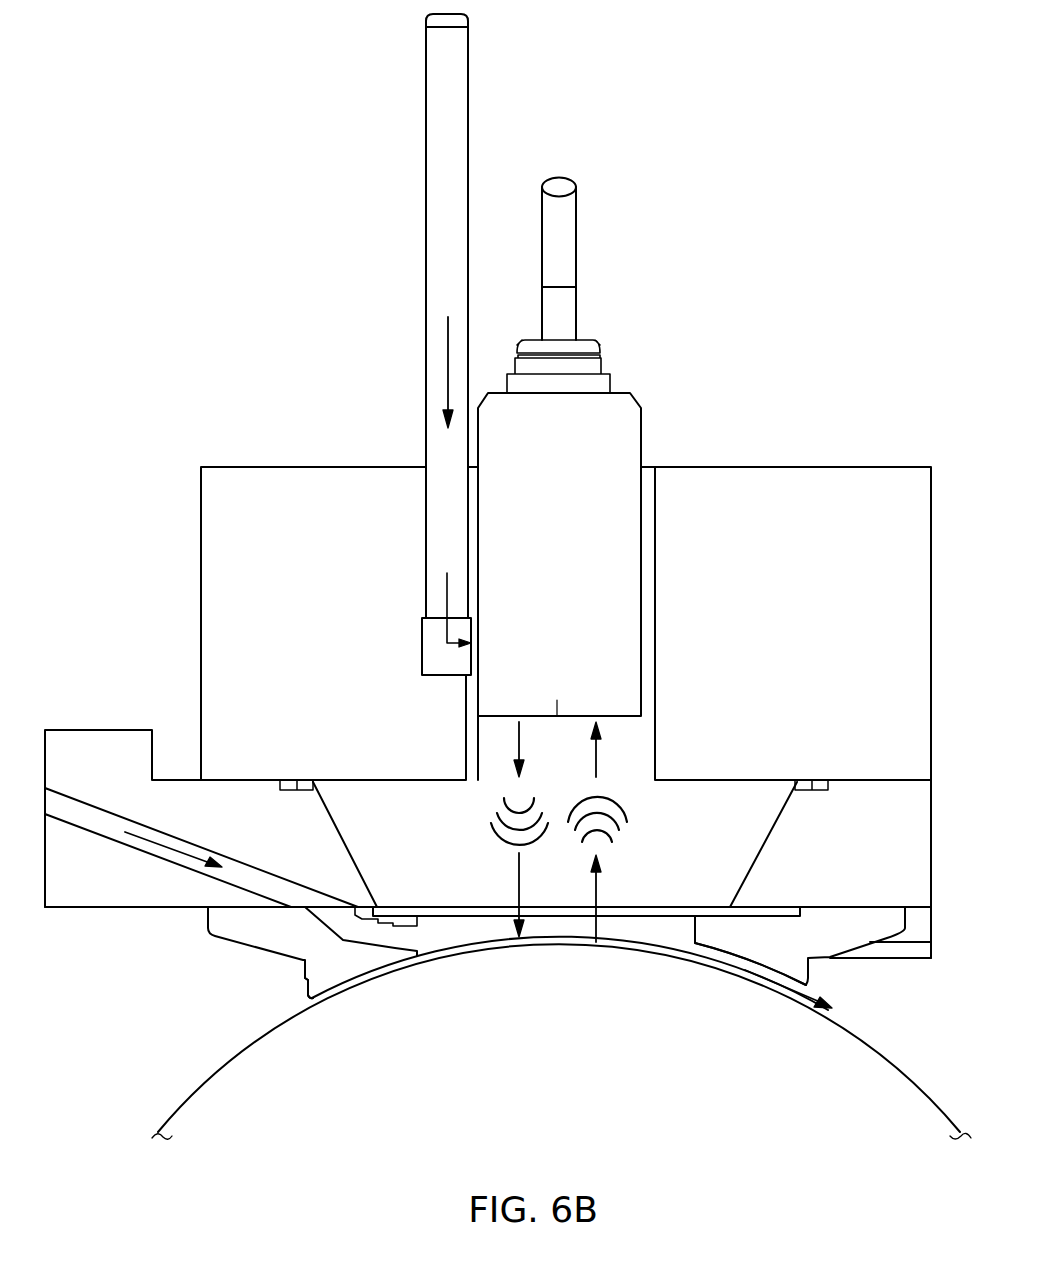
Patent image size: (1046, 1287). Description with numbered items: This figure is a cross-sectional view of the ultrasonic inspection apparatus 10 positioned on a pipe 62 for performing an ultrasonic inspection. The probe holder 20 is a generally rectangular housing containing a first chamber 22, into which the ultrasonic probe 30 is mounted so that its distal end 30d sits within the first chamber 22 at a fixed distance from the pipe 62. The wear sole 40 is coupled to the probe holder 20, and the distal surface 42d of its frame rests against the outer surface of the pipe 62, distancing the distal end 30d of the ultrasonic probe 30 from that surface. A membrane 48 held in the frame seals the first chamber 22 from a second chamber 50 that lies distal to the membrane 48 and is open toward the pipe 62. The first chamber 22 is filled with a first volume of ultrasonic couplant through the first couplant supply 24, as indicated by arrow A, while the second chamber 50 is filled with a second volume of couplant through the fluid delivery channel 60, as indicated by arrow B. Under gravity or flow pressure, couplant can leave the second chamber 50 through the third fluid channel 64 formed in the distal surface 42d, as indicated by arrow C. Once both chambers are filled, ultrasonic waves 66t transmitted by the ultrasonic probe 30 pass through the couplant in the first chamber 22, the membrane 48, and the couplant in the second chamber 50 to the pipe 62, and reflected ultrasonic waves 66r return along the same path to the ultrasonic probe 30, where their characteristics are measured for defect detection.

The ultrasonic inspection apparatus 10 is at (293, 322).
The probe holder 20 is at (215, 515).
The first chamber 22 is at (707, 895).
The first couplant supply 24 is at (438, 95).
The ultrasonic probe 30 is at (574, 562).
The distal end of the ultrasonic probe 30d is at (559, 702).
The wear sole 40 is at (205, 960).
The distal surface of the frame 42d is at (358, 980).
The membrane 48 is at (453, 917).
The second chamber 50 is at (686, 942).
The fluid delivery channel 60 is at (90, 805).
The pipe 62 is at (574, 1095).
The third fluid channel 64 is at (722, 962).
The transmitted ultrasonic waves 66t is at (500, 840).
The reflected ultrasonic waves 66r is at (627, 812).
The arrow A is at (445, 352).
The arrow B is at (185, 850).
The arrow C is at (810, 1010).